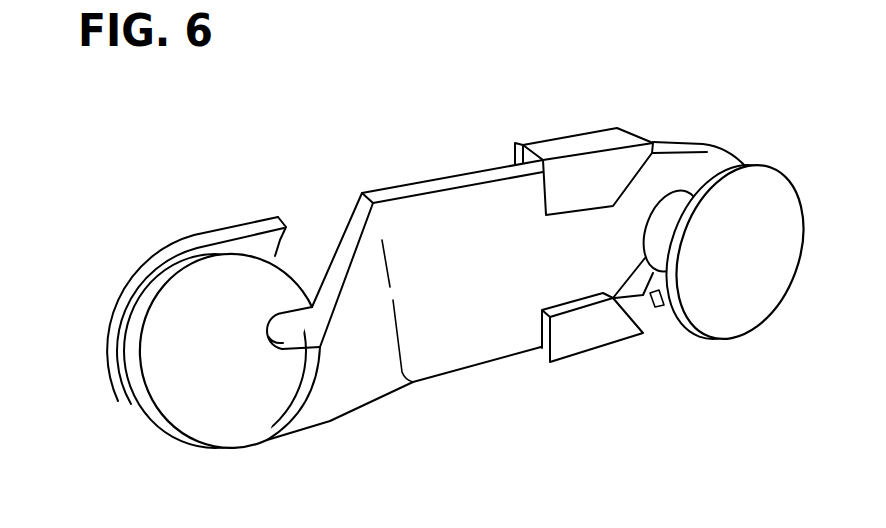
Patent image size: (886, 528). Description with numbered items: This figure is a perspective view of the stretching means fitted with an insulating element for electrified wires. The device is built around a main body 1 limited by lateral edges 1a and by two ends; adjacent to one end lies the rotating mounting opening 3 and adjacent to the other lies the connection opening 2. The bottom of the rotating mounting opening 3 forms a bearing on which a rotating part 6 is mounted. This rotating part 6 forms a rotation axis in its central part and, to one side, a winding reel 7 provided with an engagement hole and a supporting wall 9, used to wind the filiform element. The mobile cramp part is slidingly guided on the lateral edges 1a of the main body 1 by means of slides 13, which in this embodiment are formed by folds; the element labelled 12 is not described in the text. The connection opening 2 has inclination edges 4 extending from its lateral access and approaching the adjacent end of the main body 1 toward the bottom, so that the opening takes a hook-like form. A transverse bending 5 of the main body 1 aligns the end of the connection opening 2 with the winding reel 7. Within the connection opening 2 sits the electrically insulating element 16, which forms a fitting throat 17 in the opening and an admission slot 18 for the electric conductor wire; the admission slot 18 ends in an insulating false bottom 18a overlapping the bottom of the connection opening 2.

The main body 1 is at (430, 165).
The lateral edges 1a is at (466, 180).
The connection opening 2 is at (302, 263).
The rotating mounting opening 3 is at (633, 302).
The inclination edges 4 is at (279, 218).
The transverse bending 5 is at (413, 383).
The rotating part 6 is at (798, 168).
The winding reel 7 is at (672, 208).
The supporting wall 9 is at (738, 312).
The case 12 is at (579, 118).
The slides 13 is at (520, 143).
The electrically insulating element 16 is at (173, 448).
The fitting throat 17 is at (107, 340).
The admission slot 18 is at (291, 328).
The insulating false bottom 18a is at (293, 349).